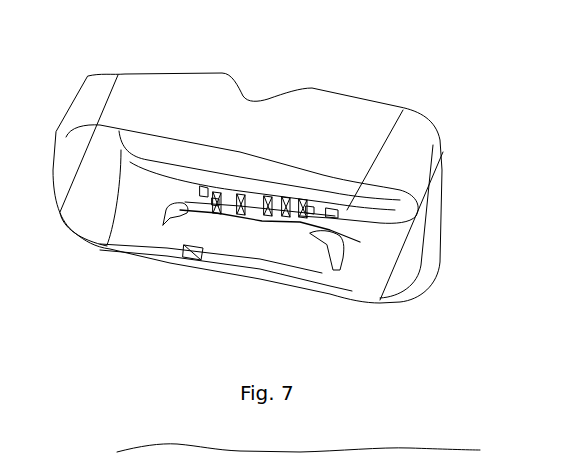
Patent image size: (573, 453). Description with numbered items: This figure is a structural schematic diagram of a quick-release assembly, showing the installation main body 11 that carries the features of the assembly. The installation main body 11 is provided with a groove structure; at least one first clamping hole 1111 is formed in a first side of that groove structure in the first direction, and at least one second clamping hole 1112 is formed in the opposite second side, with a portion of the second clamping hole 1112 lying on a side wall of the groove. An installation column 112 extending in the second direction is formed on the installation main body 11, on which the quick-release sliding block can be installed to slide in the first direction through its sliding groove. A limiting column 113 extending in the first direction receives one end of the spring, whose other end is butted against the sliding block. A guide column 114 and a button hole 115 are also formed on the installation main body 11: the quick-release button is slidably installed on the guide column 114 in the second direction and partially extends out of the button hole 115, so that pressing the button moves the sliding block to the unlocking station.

The installation main body 11 is at (97, 213).
The first clamping hole 1111 is at (287, 267).
The second clamping hole 1112 is at (182, 207).
The installation column 112 is at (238, 212).
The limiting column 113 is at (203, 188).
The guide column 114 is at (216, 201).
The button hole 115 is at (265, 213).